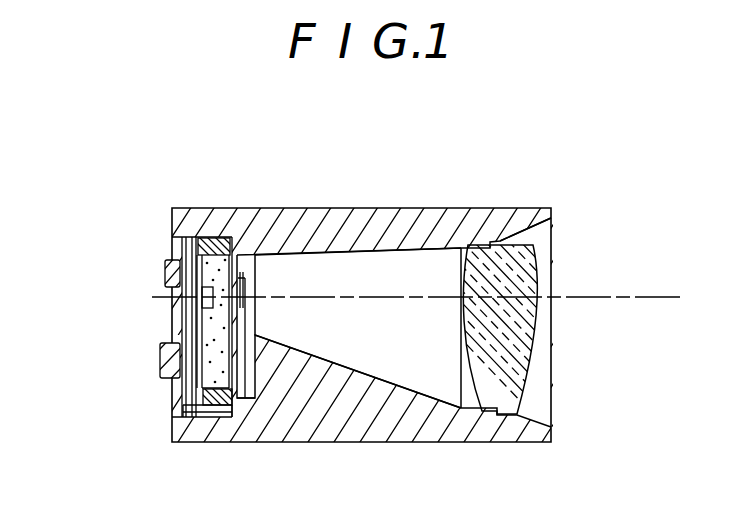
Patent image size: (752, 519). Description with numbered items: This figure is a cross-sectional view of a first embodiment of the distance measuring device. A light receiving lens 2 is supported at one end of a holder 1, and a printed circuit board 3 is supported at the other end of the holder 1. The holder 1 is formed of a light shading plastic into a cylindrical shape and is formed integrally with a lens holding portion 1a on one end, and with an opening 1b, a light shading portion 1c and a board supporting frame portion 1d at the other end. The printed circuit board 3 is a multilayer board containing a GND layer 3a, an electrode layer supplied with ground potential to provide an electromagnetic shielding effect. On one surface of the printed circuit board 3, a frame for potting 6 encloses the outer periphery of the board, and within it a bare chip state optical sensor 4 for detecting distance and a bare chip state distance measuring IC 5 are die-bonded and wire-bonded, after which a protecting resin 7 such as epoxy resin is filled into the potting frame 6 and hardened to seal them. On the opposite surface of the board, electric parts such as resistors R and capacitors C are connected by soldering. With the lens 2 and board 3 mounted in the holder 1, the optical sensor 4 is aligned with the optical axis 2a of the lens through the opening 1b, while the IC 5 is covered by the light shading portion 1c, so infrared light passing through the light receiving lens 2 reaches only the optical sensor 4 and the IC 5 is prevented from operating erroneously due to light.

The holder 1 is at (346, 224).
The lens holding portion 1a is at (539, 224).
The opening 1b is at (245, 290).
The light shading portion 1c is at (245, 368).
The board supporting frame portion 1d is at (219, 413).
The light receiving lens 2 is at (512, 366).
The optical axis 2a is at (594, 297).
The printed circuit board 3 is at (200, 300).
The GND layer 3a is at (197, 356).
The optical sensor 4 is at (200, 310).
The distance measuring IC 5 is at (203, 400).
The frame for potting 6 is at (215, 410).
The protecting resin 7 is at (183, 361).
The resistors R is at (165, 278).
The capacitors C is at (160, 358).